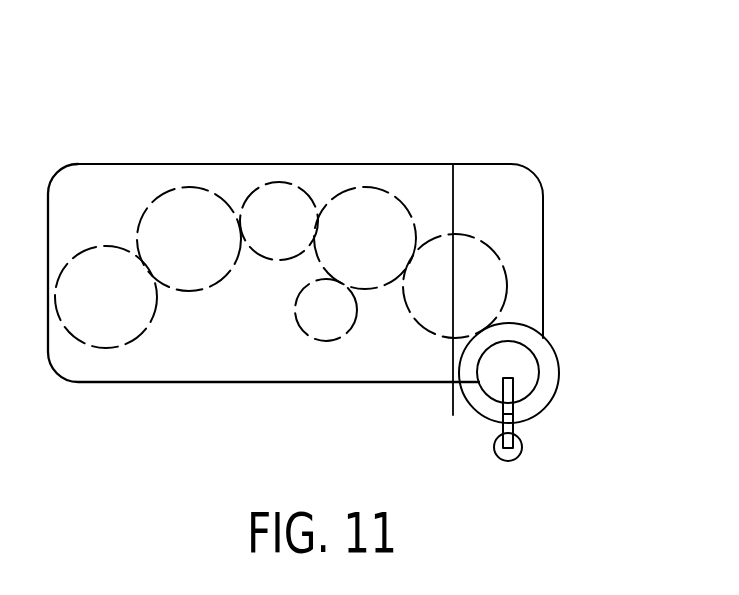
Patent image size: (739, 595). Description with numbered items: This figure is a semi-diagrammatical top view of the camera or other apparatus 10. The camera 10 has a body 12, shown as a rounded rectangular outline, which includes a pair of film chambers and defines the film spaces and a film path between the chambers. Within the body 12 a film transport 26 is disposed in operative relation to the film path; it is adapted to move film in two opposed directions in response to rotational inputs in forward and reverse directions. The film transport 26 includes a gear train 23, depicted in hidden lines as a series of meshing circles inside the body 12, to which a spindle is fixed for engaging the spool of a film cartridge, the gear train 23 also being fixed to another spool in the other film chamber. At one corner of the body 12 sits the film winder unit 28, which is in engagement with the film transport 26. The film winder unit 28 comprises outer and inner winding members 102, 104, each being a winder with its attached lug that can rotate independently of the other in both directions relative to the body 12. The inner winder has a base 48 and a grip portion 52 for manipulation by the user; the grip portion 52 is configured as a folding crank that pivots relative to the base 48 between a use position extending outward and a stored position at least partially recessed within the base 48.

The camera 10 is at (535, 153).
The body 12 is at (382, 164).
The gear train 23 is at (281, 221).
The film transport 26 is at (257, 188).
The film winder unit 28 is at (563, 377).
The base 48 is at (527, 385).
The grip portion 52 is at (520, 432).
The outer winding member 102 is at (544, 340).
The inner winding member 104 is at (574, 430).